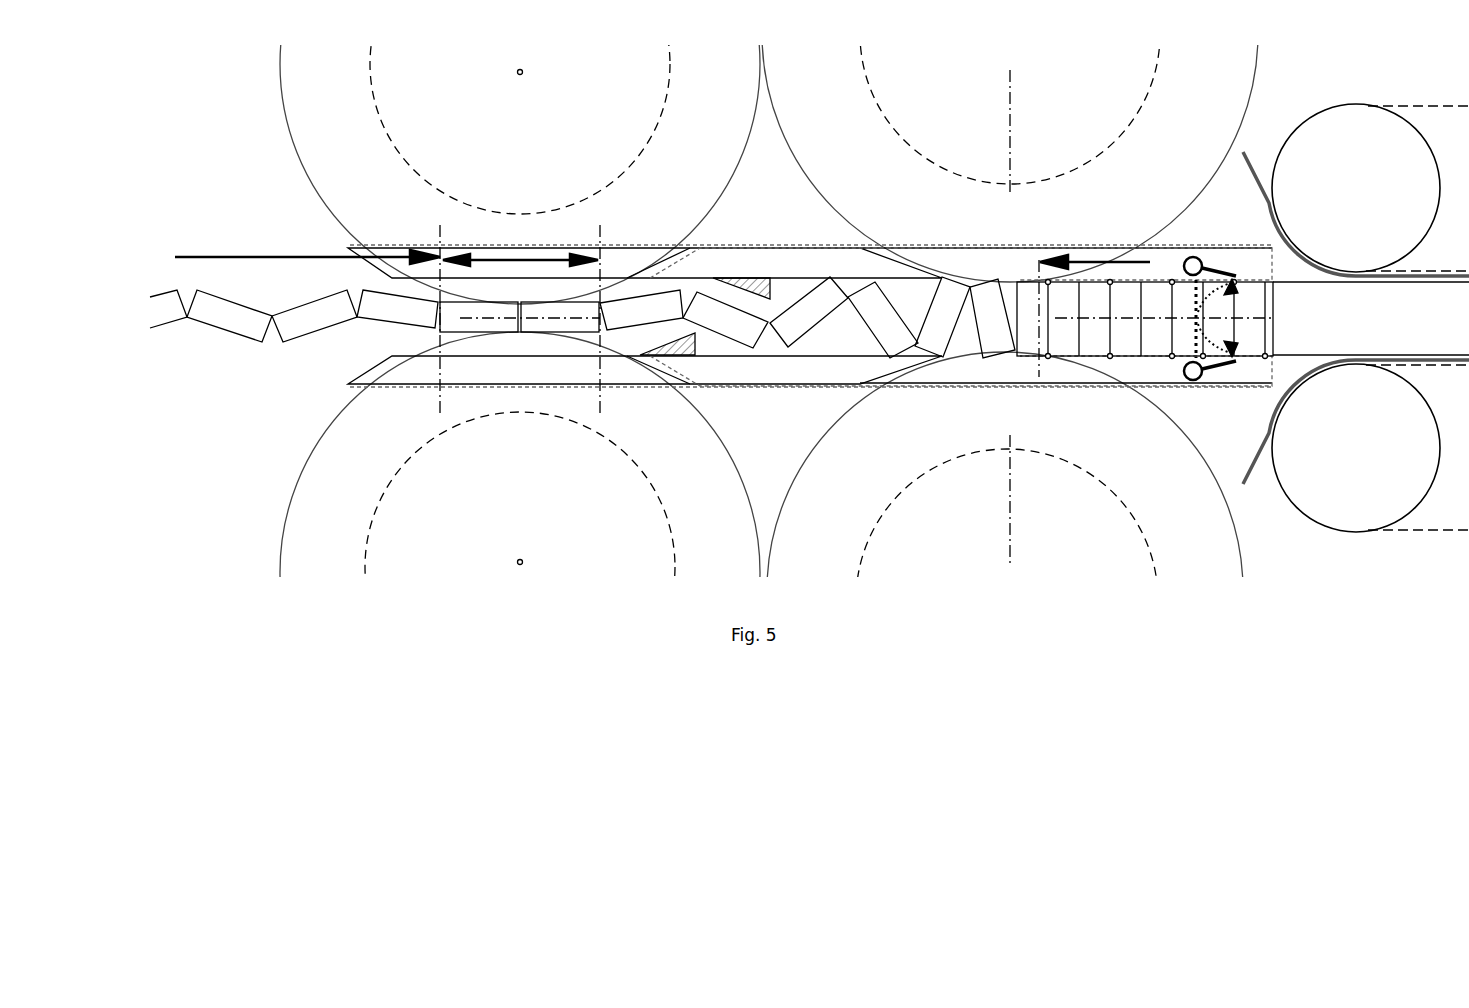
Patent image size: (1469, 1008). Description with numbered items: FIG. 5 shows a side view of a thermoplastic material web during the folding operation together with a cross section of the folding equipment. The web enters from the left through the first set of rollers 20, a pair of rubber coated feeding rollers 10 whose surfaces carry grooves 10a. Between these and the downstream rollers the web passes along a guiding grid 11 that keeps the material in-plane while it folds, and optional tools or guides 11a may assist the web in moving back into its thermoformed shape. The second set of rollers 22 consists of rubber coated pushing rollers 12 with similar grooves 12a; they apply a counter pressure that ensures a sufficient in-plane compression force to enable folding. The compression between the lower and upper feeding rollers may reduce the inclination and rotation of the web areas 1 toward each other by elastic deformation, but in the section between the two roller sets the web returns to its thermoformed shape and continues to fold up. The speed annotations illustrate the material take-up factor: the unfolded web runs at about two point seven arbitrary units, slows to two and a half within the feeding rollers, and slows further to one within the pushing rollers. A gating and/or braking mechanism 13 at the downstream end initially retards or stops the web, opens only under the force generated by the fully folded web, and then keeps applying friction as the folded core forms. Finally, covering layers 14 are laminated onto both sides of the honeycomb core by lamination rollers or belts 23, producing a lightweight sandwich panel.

The area 1 is at (809, 317).
The feeding rollers 10 is at (342, 220).
The grooves 10a is at (365, 93).
The guiding grid 11 is at (703, 262).
The tools or guides 11a is at (750, 278).
The pushing rollers 12 is at (857, 223).
The grooves 12a is at (872, 122).
The gating and/or braking mechanism 13 is at (1192, 379).
The covering layers 14 is at (1255, 178).
The feeding rollers 20 is at (546, 317).
The second set of rollers 22 is at (1054, 320).
The lamination rollers or belts 23 is at (1370, 318).